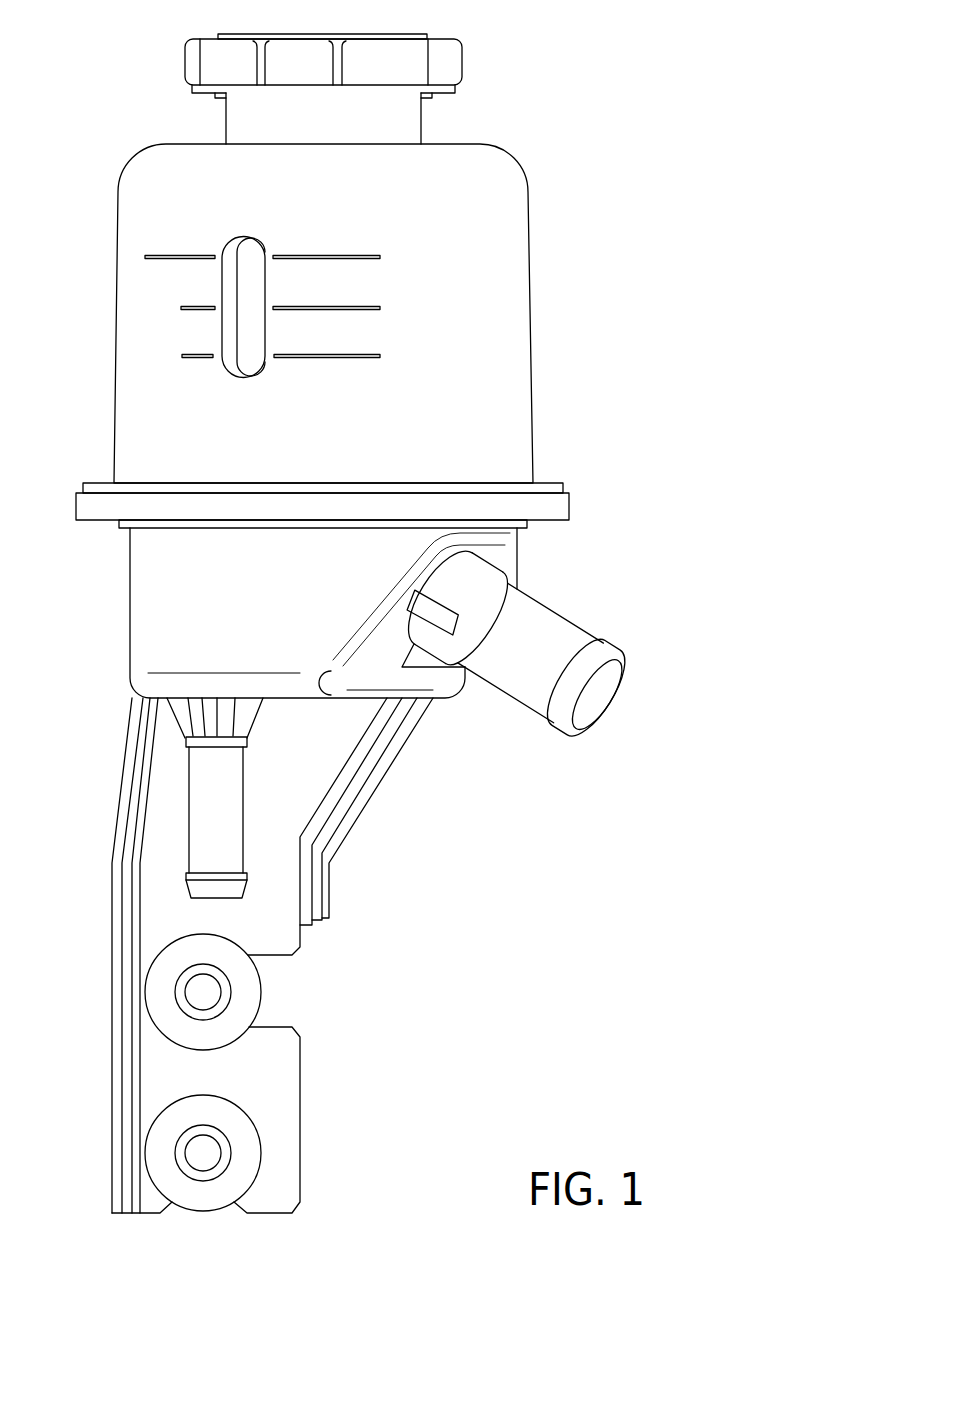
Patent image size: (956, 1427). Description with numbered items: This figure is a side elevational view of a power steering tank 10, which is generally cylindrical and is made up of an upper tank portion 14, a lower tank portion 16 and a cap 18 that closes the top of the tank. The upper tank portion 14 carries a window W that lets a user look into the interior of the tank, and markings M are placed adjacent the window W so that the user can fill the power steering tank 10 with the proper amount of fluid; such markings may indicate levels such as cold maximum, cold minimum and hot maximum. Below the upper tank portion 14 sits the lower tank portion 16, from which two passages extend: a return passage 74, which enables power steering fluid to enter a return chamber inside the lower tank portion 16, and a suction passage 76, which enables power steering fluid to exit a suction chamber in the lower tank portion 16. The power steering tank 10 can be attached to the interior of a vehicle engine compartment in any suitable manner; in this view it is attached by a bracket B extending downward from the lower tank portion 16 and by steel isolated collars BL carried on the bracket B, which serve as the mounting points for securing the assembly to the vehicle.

The power steering tank 10 is at (660, 350).
The upper tank portion 14 is at (528, 244).
The lower tank portion 16 is at (130, 630).
The cap 18 is at (462, 52).
The return passage 74 is at (243, 810).
The suction passage 76 is at (535, 717).
The window W is at (250, 240).
The markings M is at (355, 257).
The bracket B is at (330, 898).
The steel collars BL is at (261, 990).